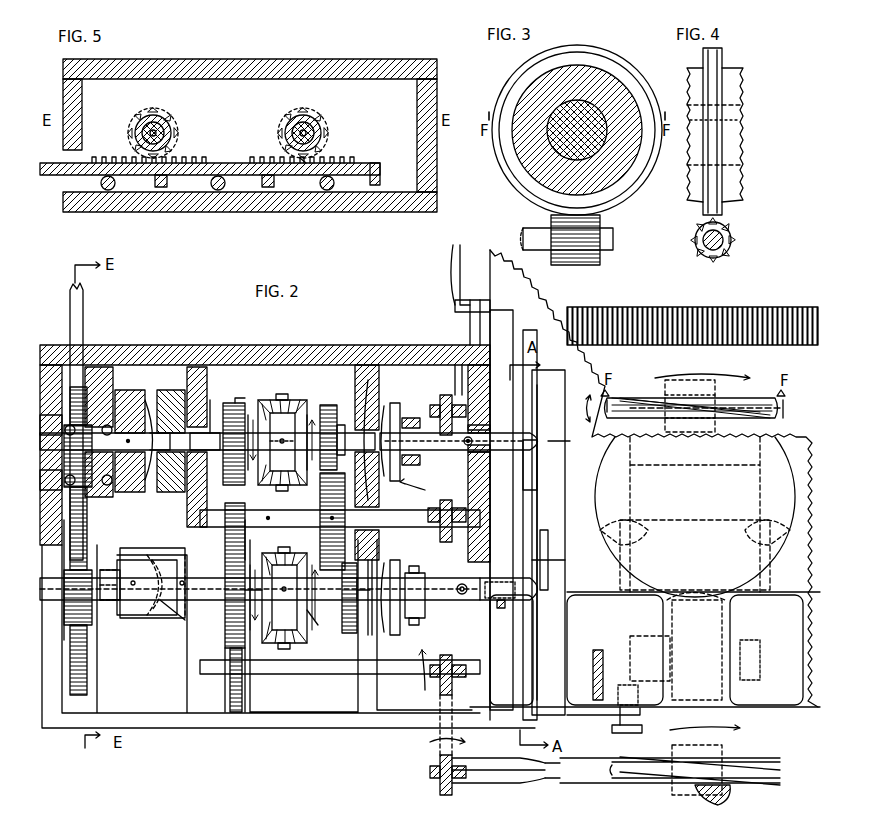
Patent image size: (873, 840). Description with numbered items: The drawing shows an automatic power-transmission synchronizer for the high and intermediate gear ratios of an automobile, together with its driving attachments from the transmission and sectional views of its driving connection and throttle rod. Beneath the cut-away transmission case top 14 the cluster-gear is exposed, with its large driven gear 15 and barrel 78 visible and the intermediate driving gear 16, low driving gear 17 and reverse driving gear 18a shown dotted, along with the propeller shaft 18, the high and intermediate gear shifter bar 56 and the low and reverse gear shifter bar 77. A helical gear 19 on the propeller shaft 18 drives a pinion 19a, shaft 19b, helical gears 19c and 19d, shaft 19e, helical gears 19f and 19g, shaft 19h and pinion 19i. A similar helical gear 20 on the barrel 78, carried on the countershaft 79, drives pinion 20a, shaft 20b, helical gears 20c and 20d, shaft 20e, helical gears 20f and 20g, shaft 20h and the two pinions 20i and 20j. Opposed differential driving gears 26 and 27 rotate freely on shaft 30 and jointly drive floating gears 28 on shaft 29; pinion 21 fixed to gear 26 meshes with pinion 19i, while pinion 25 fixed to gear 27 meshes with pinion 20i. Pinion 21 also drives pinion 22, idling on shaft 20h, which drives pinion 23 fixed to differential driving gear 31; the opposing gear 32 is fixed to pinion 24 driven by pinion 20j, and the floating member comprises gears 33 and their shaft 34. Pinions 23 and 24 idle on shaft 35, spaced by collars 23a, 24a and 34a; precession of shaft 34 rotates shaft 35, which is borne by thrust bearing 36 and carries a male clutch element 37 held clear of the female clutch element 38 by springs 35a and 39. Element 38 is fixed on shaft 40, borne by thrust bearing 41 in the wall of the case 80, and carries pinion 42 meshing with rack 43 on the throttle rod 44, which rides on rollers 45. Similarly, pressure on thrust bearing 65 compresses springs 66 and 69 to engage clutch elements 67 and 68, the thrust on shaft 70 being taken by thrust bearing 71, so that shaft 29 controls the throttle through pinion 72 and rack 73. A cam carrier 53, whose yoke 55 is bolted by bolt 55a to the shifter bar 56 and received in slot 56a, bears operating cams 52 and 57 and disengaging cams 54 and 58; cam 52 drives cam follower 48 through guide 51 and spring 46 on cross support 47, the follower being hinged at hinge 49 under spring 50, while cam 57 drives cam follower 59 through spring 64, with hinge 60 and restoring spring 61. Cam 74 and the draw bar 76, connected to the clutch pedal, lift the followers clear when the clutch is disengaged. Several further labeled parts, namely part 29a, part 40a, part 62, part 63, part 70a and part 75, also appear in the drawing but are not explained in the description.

In FIG. 2, the transmission case top 14 is at (498, 248).
In FIG. 2, the large driven gear 15 is at (745, 322).
In FIG. 2, the intermediate driving gear 16 is at (790, 495).
In FIG. 2, the low driving gear 17 is at (760, 568).
In FIG. 2, the propeller shaft 18 is at (728, 795).
In FIG. 2, the reverse driving gear 18a is at (748, 660).
In FIG. 2, the helical gear 19 is at (760, 778).
In FIG. 2, the pinion 19a is at (720, 748).
In FIG. 2, the shaft 19b is at (508, 780).
In FIG. 2, the helical gear 19c is at (446, 796).
In FIG. 2, the helical gear 19d is at (432, 778).
In FIG. 2, the shaft 19e is at (436, 728).
In FIG. 2, the helical gear 19f is at (420, 662).
In FIG. 2, the helical gear 19g is at (448, 655).
In FIG. 2, the shaft 19h is at (340, 671).
In FIG. 2, the pinion 19i is at (235, 712).
In FIG. 3, the helical gear 20 is at (618, 66).
In FIG. 4, the helical gear 20 is at (722, 62).
In FIG. 2, the helical gear 20 is at (770, 400).
In FIG. 3, the pinion 20a is at (580, 250).
In FIG. 4, the pinion 20a is at (735, 230).
In FIG. 2, the pinion 20a is at (715, 390).
In FIG. 3, the shaft 20b is at (608, 240).
In FIG. 4, the shaft 20b is at (722, 244).
In FIG. 2, the shaft 20b is at (600, 378).
In FIG. 2, the helical gear 20c is at (440, 400).
In FIG. 2, the helical gear 20d is at (458, 365).
In FIG. 2, the shaft 20e is at (436, 535).
In FIG. 2, the helical gear 20f is at (452, 525).
In FIG. 2, the helical gear 20g is at (432, 525).
In FIG. 2, the shaft 20h is at (360, 520).
In FIG. 2, the pinion 20i is at (402, 490).
In FIG. 2, the pinion 20j is at (326, 473).
In FIG. 2, the pinion 21 is at (260, 621).
In FIG. 2, the pinion 22 is at (226, 640).
In FIG. 2, the pinion 23 is at (234, 435).
In FIG. 2, the spacing collar 23a is at (236, 398).
In FIG. 2, the pinion 24 is at (327, 428).
In FIG. 2, the spacing collar 24a is at (340, 425).
In FIG. 2, the pinion 25 is at (354, 611).
In FIG. 2, the differential driving gear 26 is at (255, 540).
In FIG. 2, the differential driving gear 27 is at (317, 627).
In FIG. 2, the differential floating member gears 28 is at (284, 597).
In FIG. 2, the differential floating member shaft 29 is at (290, 600).
In FIG. 2, the gear 29a is at (316, 640).
In FIG. 5, the shaft 30 is at (322, 138).
In FIG. 2, the shaft 30 is at (195, 744).
In FIG. 2, the differential driving gear 31 is at (252, 412).
In FIG. 2, the differential driving gear 32 is at (310, 412).
In FIG. 2, the floating member gears 33 is at (270, 398).
In FIG. 2, the floating member shaft 34 is at (288, 386).
In FIG. 2, the spacing collar 34a is at (282, 394).
In FIG. 2, the shaft 35 is at (282, 441).
In FIG. 2, the spring 35a is at (212, 400).
In FIG. 2, the thrust bearing 36 is at (370, 365).
In FIG. 2, the male clutch element 37 is at (165, 431).
In FIG. 2, the female clutch element 38 is at (130, 431).
In FIG. 2, the spring 39 is at (190, 367).
In FIG. 5, the shaft 40 is at (170, 138).
In FIG. 2, the shaft 40 is at (130, 441).
In FIG. 2, the shaft portion 40a is at (150, 452).
In FIG. 2, the thrust bearing 41 is at (105, 425).
In FIG. 5, the pinion 42 is at (172, 118).
In FIG. 2, the pinion 42 is at (92, 470).
In FIG. 5, the rack 43 is at (196, 163).
In FIG. 2, the rack 43 is at (76, 425).
In FIG. 5, the rod 44 is at (58, 170).
In FIG. 2, the rod 44 is at (70, 330).
In FIG. 5, the rollers 45 is at (116, 183).
In FIG. 2, the rollers 45 is at (92, 425).
In FIG. 2, the spring 46 is at (382, 400).
In FIG. 2, the cross support 47 is at (397, 432).
In FIG. 2, the cam follower 48 is at (459, 441).
In FIG. 2, the hinge 49 is at (485, 455).
In FIG. 2, the spring 50 is at (488, 440).
In FIG. 2, the guide 51 is at (405, 465).
In FIG. 2, the operating cam 52 is at (548, 448).
In FIG. 2, the cam carrier 53 is at (548, 478).
In FIG. 2, the disengaging cam 54 is at (538, 495).
In FIG. 2, the transverse yoke 55 is at (575, 712).
In FIG. 2, the bolt 55a is at (624, 733).
In FIG. 2, the high and intermediate gear shifter bar 56 is at (646, 649).
In FIG. 2, the slot 56a is at (606, 672).
In FIG. 2, the operating cam 57 is at (548, 553).
In FIG. 2, the disengaging cam 58 is at (548, 570).
In FIG. 2, the cam follower 59 is at (427, 595).
In FIG. 2, the hinge 60 is at (500, 608).
In FIG. 2, the spring 61 is at (495, 600).
In FIG. 2, the collar 62 is at (422, 600).
In FIG. 2, the fork 63 is at (403, 635).
In FIG. 2, the spring 64 is at (395, 635).
In FIG. 2, the thrust bearing 65 is at (370, 640).
In FIG. 2, the spring 66 is at (232, 712).
In FIG. 2, the clutch element 67 is at (180, 625).
In FIG. 2, the clutch element 68 is at (133, 620).
In FIG. 2, the spring 69 is at (158, 625).
In FIG. 2, the shaft 70 is at (107, 586).
In FIG. 2, the follower housing 70a is at (172, 560).
In FIG. 2, the thrust bearing 71 is at (70, 600).
In FIG. 5, the pinion 72 is at (322, 118).
In FIG. 2, the pinion 72 is at (92, 600).
In FIG. 5, the rack 73 is at (330, 162).
In FIG. 2, the rack 73 is at (86, 620).
In FIG. 2, the cam 74 is at (523, 548).
In FIG. 2, the bracket 75 is at (472, 322).
In FIG. 2, the draw bar 76 is at (456, 262).
In FIG. 2, the low and reverse gear shifter bar 77 is at (737, 650).
In FIG. 3, the cluster-gear barrel 78 is at (614, 96).
In FIG. 4, the cluster-gear barrel 78 is at (740, 88).
In FIG. 2, the cluster-gear barrel 78 is at (640, 357).
In FIG. 3, the countershaft 79 is at (606, 125).
In FIG. 4, the countershaft 79 is at (740, 124).
In FIG. 5, the case 80 is at (260, 70).
In FIG. 2, the case 80 is at (160, 345).